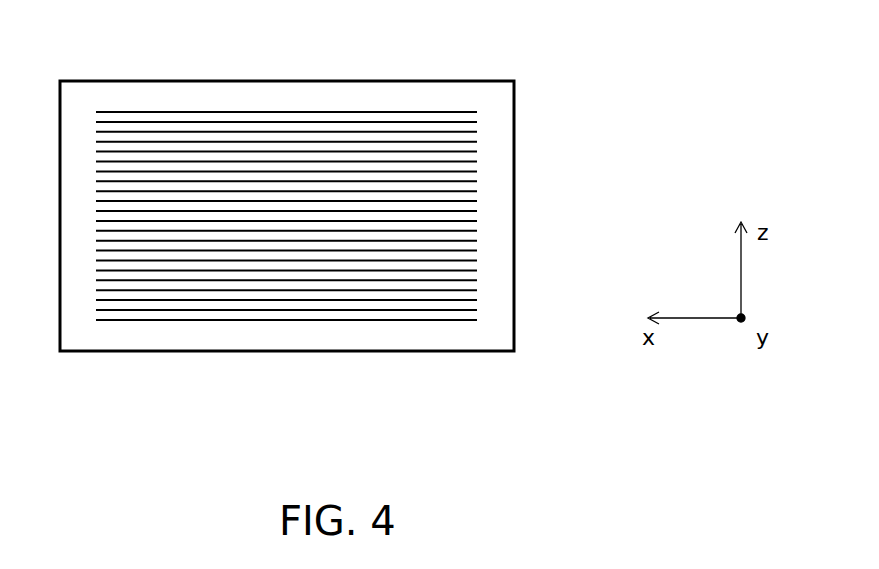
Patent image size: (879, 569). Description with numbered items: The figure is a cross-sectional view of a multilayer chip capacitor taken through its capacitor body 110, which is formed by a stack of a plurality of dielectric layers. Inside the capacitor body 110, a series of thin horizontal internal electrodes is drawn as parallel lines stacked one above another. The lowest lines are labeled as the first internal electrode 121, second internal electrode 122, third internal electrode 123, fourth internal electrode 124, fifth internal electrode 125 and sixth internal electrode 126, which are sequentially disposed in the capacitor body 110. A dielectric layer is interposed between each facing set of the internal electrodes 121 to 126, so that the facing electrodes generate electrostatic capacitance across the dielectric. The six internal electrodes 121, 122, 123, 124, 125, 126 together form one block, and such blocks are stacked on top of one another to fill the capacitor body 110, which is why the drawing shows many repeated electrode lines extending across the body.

The capacitor body 110 is at (417, 81).
The first internal electrode 121 is at (125, 322).
The second internal electrode 122 is at (183, 312).
The third internal electrode 123 is at (237, 302).
The fourth internal electrode 124 is at (317, 292).
The fifth internal electrode 125 is at (368, 282).
The sixth internal electrode 126 is at (425, 272).